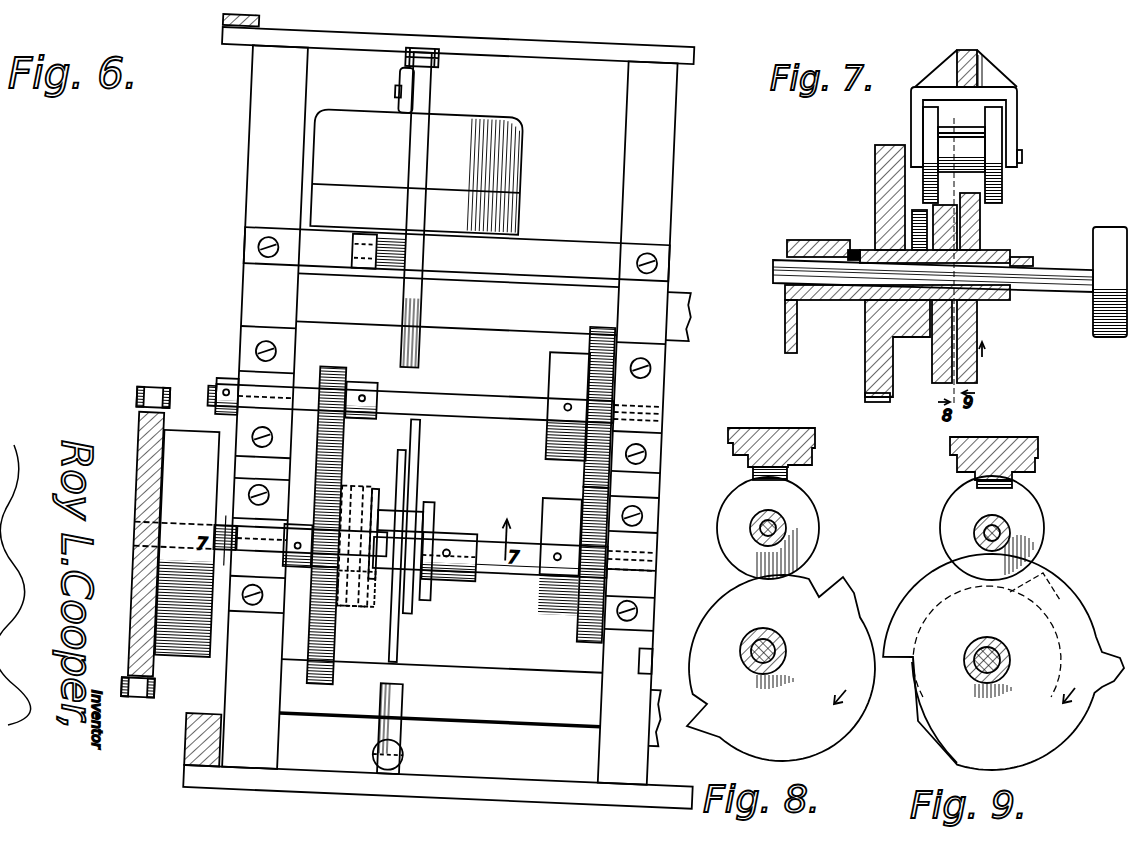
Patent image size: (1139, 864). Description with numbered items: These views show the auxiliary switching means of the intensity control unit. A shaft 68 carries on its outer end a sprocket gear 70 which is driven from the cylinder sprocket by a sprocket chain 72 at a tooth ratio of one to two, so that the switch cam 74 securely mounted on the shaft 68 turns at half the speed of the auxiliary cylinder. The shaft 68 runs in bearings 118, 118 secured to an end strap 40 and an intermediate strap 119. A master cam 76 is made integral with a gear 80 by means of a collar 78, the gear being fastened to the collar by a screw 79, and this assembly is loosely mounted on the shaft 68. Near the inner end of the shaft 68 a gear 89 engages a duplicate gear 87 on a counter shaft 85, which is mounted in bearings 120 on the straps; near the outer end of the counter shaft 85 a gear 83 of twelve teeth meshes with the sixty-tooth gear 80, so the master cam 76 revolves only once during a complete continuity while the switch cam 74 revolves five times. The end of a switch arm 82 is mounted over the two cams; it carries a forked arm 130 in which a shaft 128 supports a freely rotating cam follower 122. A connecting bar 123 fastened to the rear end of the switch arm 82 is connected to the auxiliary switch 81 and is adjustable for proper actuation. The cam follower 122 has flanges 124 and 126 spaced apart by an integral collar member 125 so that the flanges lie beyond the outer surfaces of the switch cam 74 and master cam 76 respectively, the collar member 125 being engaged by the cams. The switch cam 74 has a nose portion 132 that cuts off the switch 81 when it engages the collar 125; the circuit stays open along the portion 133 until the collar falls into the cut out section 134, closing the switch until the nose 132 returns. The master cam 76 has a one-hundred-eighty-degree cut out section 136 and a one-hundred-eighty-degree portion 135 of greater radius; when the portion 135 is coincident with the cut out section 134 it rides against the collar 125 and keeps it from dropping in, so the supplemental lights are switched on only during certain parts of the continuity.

In FIG. 6, the end strap 40 is at (238, 302).
In FIG. 6, the shaft 68 is at (498, 571).
In FIG. 7, the shaft 68 is at (1047, 282).
In FIG. 8, the shaft 68 is at (786, 655).
In FIG. 9, the shaft 68 is at (1010, 660).
In FIG. 6, the sprocket gear 70 is at (167, 431).
In FIG. 6, the sprocket chain 72 is at (165, 403).
In FIG. 6, the switch cam 74 is at (409, 650).
In FIG. 7, the switch cam 74 is at (968, 363).
In FIG. 9, the switch cam 74 is at (1090, 632).
In FIG. 6, the master cam 76 is at (398, 636).
In FIG. 7, the master cam 76 is at (935, 372).
In FIG. 8, the master cam 76 is at (840, 717).
In FIG. 9, the master cam 76 is at (920, 733).
In FIG. 6, the collar portion 78 is at (364, 501).
In FIG. 7, the collar portion 78 is at (935, 283).
In FIG. 7, the screw 79 is at (875, 227).
In FIG. 6, the gear 80 is at (324, 689).
In FIG. 7, the gear 80 is at (880, 398).
In FIG. 6, the auxiliary switch 81 is at (511, 122).
In FIG. 6, the switch arm 82 is at (417, 306).
In FIG. 7, the switch arm 82 is at (978, 56).
In FIG. 8, the switch arm 82 is at (790, 428).
In FIG. 9, the switch arm 82 is at (1003, 438).
In FIG. 6, the gear 83 is at (331, 373).
In FIG. 6, the counter shaft 85 is at (472, 395).
In FIG. 6, the gear 87 is at (597, 322).
In FIG. 6, the gear 89 is at (587, 492).
In FIG. 6, the bearings 118 is at (255, 528).
In FIG. 7, the bearings 118 is at (909, 296).
In FIG. 6, the intermediate strap 119 is at (658, 632).
In FIG. 6, the bearings 120 is at (238, 388).
In FIG. 7, the cam follower 122 is at (1007, 177).
In FIG. 6, the connecting bar 123 is at (424, 63).
In FIG. 6, the flange 124 is at (439, 511).
In FIG. 7, the flange 124 is at (1002, 140).
In FIG. 9, the flange 124 is at (1032, 515).
In FIG. 6, the collar member 125 is at (410, 516).
In FIG. 7, the collar member 125 is at (945, 147).
In FIG. 8, the collar member 125 is at (776, 520).
In FIG. 9, the collar member 125 is at (990, 523).
In FIG. 6, the flange 126 is at (418, 484).
In FIG. 7, the flange 126 is at (930, 112).
In FIG. 8, the flange 126 is at (819, 537).
In FIG. 7, the shaft 128 is at (1022, 157).
In FIG. 8, the shaft 128 is at (786, 525).
In FIG. 9, the shaft 128 is at (1010, 533).
In FIG. 7, the forked arm 130 is at (1018, 105).
In FIG. 8, the forked arm 130 is at (788, 472).
In FIG. 9, the forked arm 130 is at (1012, 482).
In FIG. 9, the nose portion 132 is at (1113, 677).
In FIG. 9, the portion 133 is at (1057, 590).
In FIG. 9, the cut out section 134 is at (913, 677).
In FIG. 8, the portion 135 is at (853, 603).
In FIG. 8, the cut out section 136 is at (808, 587).